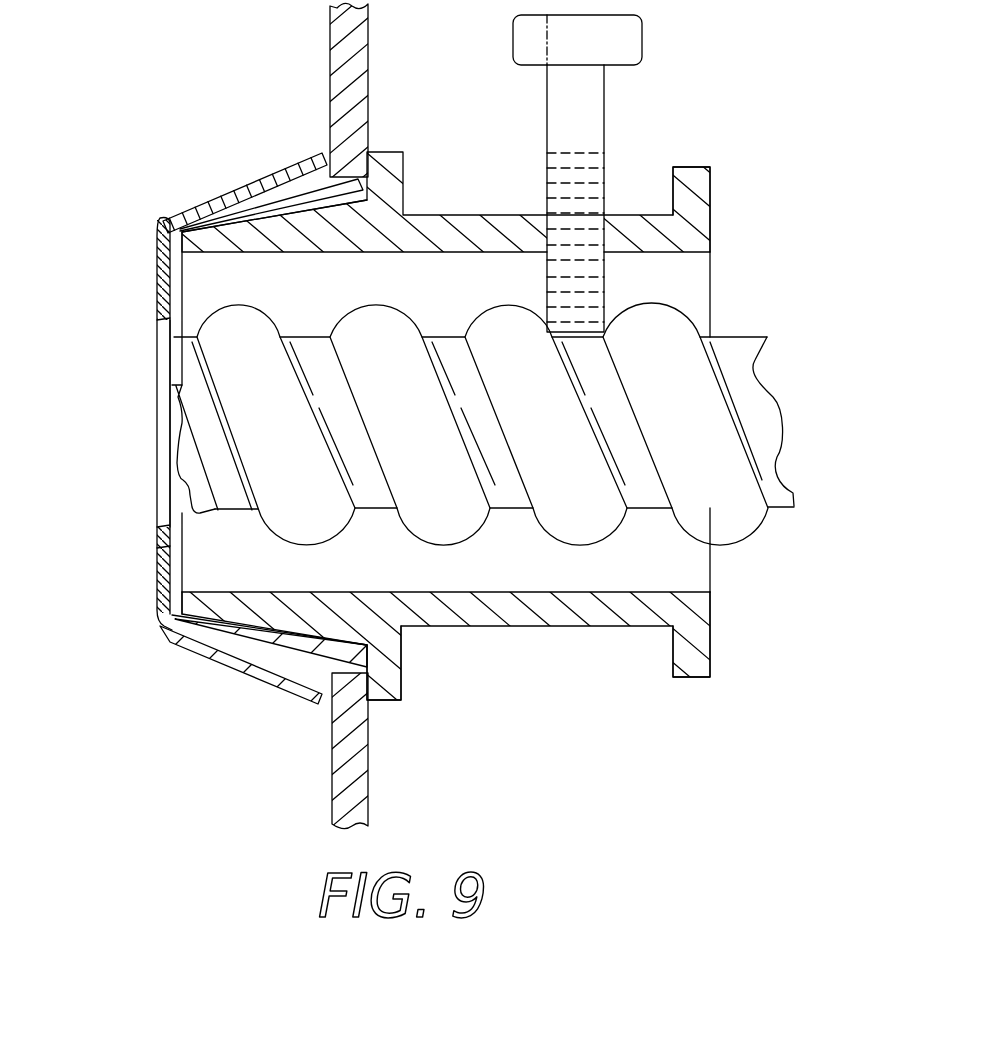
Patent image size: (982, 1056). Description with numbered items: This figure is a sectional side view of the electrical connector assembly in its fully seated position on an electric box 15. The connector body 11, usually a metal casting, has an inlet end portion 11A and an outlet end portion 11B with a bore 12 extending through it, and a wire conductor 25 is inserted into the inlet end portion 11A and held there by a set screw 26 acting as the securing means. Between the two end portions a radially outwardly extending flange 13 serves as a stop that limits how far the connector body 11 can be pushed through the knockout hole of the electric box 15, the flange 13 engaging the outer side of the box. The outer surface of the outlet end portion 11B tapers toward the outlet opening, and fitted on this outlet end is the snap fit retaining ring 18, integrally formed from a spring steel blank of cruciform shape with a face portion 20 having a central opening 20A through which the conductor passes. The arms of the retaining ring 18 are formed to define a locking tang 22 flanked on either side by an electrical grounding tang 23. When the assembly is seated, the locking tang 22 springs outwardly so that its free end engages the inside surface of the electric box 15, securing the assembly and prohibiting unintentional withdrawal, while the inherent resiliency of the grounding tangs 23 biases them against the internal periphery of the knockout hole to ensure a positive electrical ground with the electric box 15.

The connector body 11 is at (470, 214).
The inlet end portion 11A is at (643, 613).
The outlet end portion 11B is at (193, 637).
The bore 12 is at (528, 592).
The flange 13 is at (407, 653).
The electric box 15 is at (370, 77).
The snap fit retaining ring 18 is at (156, 550).
The face portion 20 is at (157, 282).
The central opening 20A is at (163, 454).
The locking tang 22 is at (277, 176).
The electrical grounding tang 23 is at (313, 655).
The wire conductor 25 is at (712, 404).
The set screw 26 is at (600, 190).